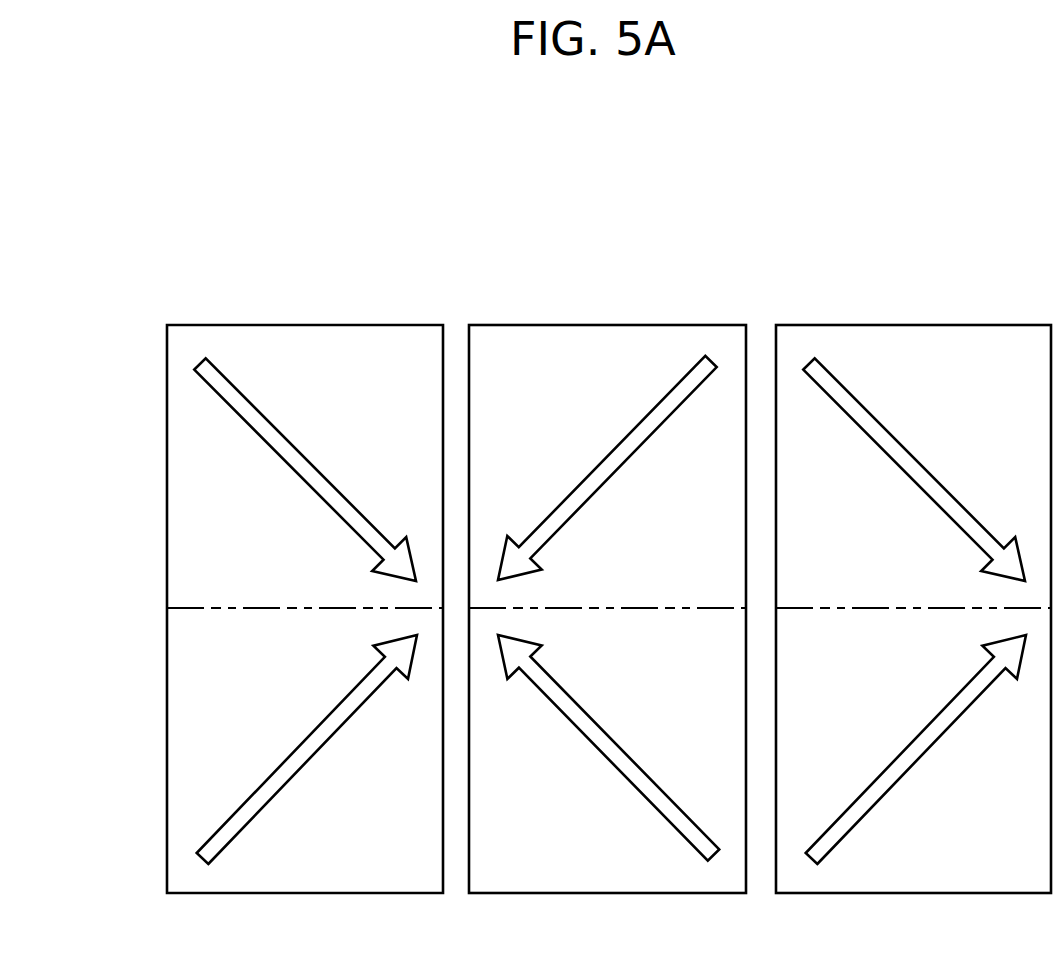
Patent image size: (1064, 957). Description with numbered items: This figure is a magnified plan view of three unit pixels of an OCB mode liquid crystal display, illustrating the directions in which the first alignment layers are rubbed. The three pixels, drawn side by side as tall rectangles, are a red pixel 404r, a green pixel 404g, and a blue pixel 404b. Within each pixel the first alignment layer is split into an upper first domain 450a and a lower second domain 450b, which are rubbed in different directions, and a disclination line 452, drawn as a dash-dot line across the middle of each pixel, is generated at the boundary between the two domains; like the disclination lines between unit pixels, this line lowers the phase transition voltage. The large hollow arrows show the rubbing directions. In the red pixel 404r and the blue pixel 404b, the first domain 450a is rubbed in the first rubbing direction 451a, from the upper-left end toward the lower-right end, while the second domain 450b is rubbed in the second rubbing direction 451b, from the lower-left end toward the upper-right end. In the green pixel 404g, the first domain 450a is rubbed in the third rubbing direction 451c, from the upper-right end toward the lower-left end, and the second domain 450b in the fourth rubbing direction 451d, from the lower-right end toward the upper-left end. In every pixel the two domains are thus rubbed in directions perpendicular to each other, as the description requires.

The red pixel 404r is at (257, 579).
The green pixel 404g is at (648, 325).
The blue pixel 404b is at (953, 325).
The first domain 450a is at (178, 503).
The second domain 450b is at (180, 710).
The disclination line 452 is at (192, 607).
The first rubbing direction 451a is at (298, 458).
The second rubbing direction 451b is at (313, 740).
The third rubbing direction 451c is at (610, 458).
The fourth rubbing direction 451d is at (605, 738).